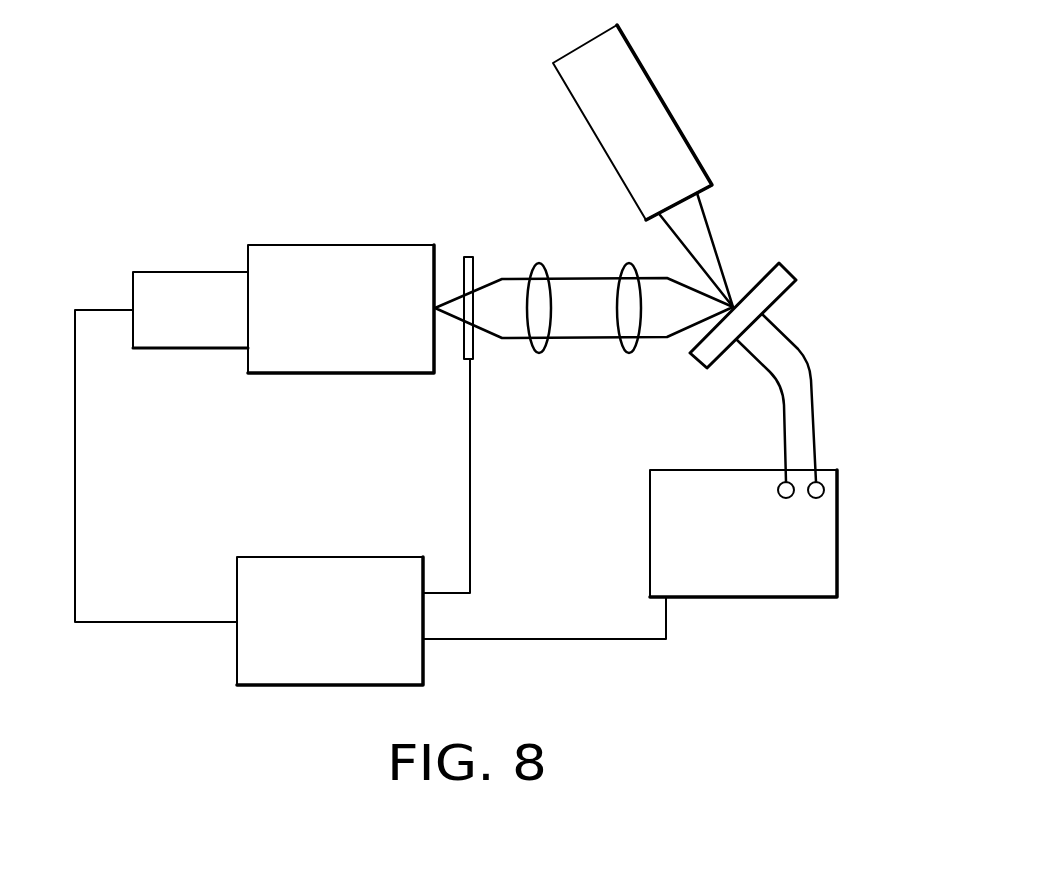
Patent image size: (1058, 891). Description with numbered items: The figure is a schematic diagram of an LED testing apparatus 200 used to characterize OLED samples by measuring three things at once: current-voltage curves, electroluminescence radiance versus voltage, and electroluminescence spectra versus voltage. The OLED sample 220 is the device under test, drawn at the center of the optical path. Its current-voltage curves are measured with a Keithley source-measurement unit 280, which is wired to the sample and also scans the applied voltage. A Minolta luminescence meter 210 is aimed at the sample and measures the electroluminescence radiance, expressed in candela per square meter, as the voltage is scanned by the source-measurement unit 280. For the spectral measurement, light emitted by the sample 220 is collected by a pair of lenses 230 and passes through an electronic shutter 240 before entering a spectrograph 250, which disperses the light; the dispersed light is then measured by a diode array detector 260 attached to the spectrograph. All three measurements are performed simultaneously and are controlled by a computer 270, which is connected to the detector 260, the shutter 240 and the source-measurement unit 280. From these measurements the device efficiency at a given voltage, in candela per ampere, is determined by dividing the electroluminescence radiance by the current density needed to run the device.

The LED testing apparatus 200 is at (210, 158).
The luminescence meter 210 is at (608, 140).
The OLED sample 220 is at (788, 268).
The pair of lenses 230 is at (589, 340).
The electronic shutter 240 is at (469, 255).
The spectrograph 250 is at (315, 324).
The diode array detector 260 is at (168, 325).
The computer 270 is at (306, 637).
The source-measurement unit 280 is at (718, 556).